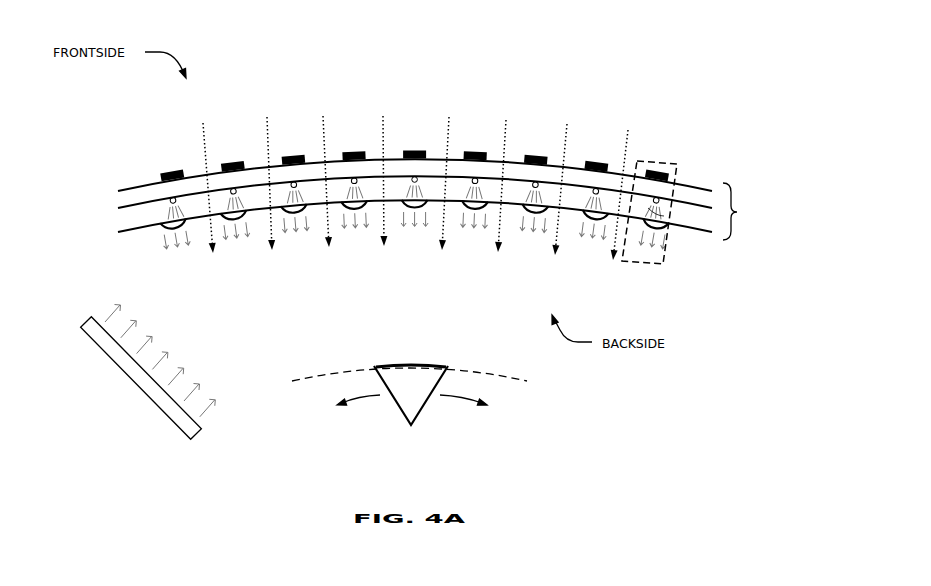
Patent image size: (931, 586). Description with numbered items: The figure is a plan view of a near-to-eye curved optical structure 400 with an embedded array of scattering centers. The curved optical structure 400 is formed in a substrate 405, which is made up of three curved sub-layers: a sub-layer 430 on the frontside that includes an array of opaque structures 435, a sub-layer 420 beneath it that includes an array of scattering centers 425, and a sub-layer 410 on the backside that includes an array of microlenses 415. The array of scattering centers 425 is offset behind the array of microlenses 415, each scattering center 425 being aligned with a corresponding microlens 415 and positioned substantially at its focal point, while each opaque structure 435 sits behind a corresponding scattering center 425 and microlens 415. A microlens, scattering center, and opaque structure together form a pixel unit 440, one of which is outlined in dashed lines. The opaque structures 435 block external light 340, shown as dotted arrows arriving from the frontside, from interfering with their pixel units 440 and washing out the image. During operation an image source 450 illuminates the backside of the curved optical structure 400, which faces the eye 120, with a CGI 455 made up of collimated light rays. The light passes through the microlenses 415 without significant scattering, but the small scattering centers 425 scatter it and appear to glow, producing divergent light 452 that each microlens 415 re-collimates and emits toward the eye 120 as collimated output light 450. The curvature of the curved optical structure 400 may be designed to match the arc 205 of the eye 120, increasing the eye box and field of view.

The curved optical structure 400 is at (637, 67).
The sub-layer 430 is at (112, 188).
The sub-layer 420 is at (112, 211).
The sub-layer 410 is at (117, 240).
The opaque structures 435 is at (355, 157).
The scattering centers 425 is at (170, 196).
The microlenses 415 is at (334, 232).
The external light 340 is at (203, 128).
The pixel unit 440 is at (677, 176).
The divergent light 452 is at (668, 214).
The substrate 405 is at (767, 214).
The image source / output light 450 is at (157, 408).
The CGI 455 is at (225, 423).
The arc 205 is at (310, 373).
The eye 120 is at (423, 395).